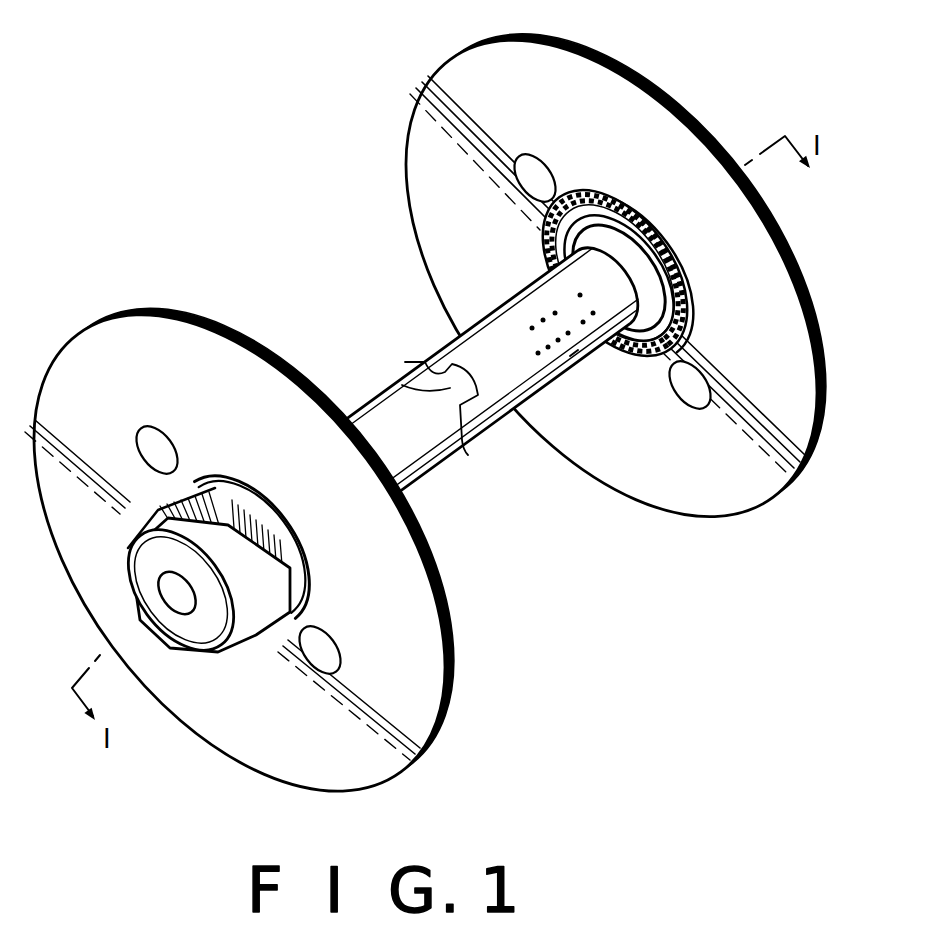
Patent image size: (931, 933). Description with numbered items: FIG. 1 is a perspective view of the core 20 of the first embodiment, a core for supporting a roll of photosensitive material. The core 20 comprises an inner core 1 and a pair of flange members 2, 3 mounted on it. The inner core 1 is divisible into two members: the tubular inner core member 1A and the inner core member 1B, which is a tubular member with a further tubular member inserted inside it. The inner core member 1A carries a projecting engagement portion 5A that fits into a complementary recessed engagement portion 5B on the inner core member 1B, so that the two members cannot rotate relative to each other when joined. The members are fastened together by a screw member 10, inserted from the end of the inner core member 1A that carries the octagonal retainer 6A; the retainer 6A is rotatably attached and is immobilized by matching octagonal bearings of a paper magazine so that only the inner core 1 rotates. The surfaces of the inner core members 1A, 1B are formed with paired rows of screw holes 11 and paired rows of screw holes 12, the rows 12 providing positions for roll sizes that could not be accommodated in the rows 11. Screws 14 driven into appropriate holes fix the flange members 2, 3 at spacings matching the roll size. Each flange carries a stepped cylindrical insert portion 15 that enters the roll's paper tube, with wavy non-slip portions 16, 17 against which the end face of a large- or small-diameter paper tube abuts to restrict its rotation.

The core 20 is at (454, 433).
The inner core 1 is at (427, 406).
The inner core member 1A is at (372, 432).
The inner core member 1B is at (477, 333).
The flange member 2 is at (146, 330).
The flange member 3 is at (455, 80).
The engagement portion 5A is at (430, 398).
The engagement portion 5B is at (433, 378).
The retainer 6A is at (273, 638).
The screw member 10 is at (196, 628).
The screw holes 11 is at (583, 360).
The screw holes 12 is at (532, 303).
The screws 14 is at (676, 292).
The insert portion 15 is at (656, 252).
The non-slip portion 16 is at (625, 214).
The non-slip portion 17 is at (600, 193).